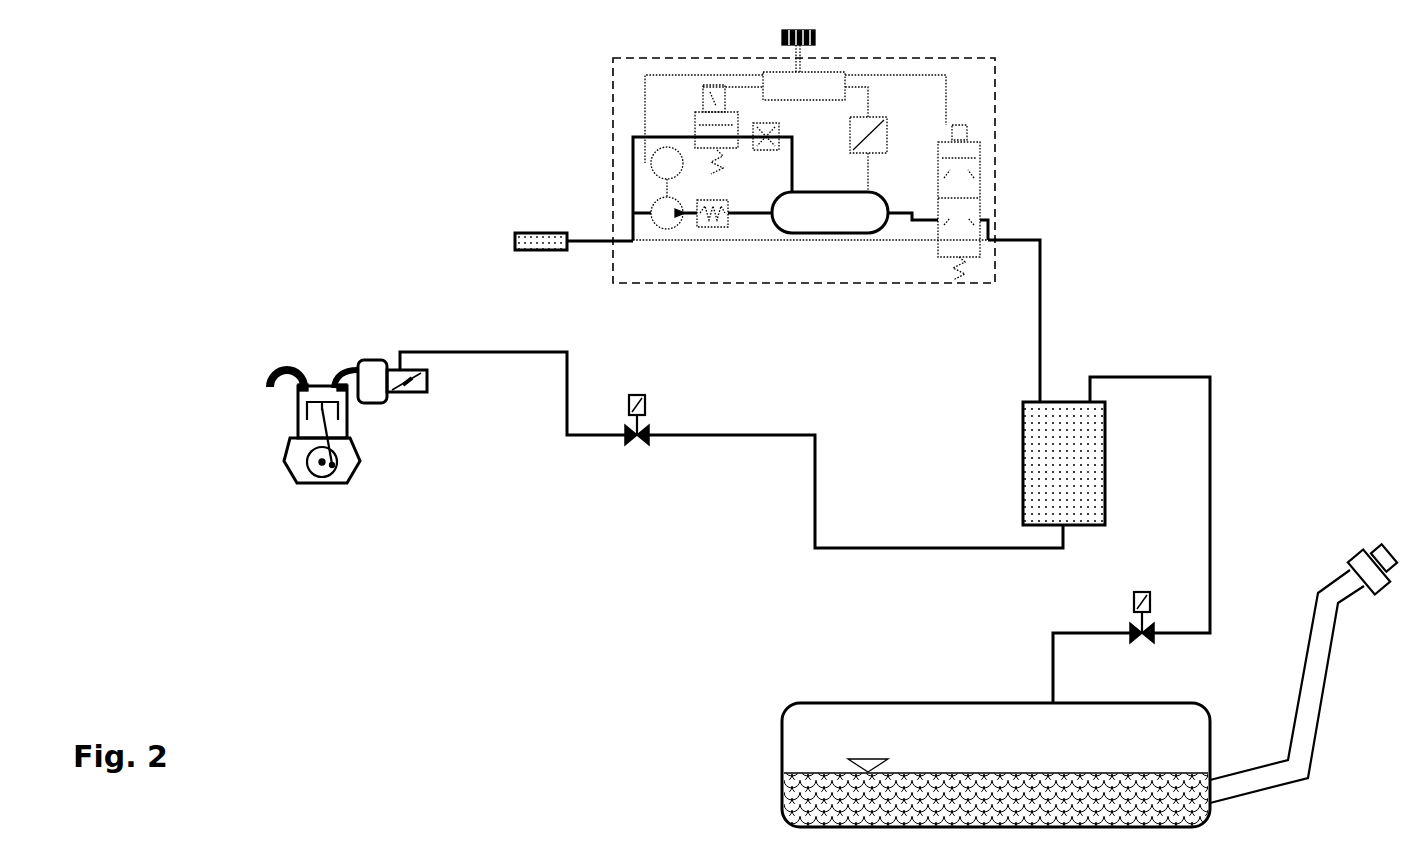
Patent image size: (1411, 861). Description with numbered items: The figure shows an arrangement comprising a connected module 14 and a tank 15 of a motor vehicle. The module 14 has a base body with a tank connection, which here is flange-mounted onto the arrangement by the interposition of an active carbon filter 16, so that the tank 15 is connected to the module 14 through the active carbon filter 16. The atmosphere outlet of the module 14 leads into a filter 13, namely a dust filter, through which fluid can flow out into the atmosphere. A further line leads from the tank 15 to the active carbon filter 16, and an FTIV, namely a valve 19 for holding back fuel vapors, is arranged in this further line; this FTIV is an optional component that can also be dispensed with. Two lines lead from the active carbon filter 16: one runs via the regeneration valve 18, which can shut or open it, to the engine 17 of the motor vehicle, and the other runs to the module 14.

The filter 13 is at (515, 243).
The module 14 is at (608, 162).
The tank 15 is at (820, 703).
The active carbon filter 16 is at (1023, 405).
The engine 17 is at (262, 381).
The regeneration valve 18 is at (628, 395).
The FTIV 19 is at (1143, 592).